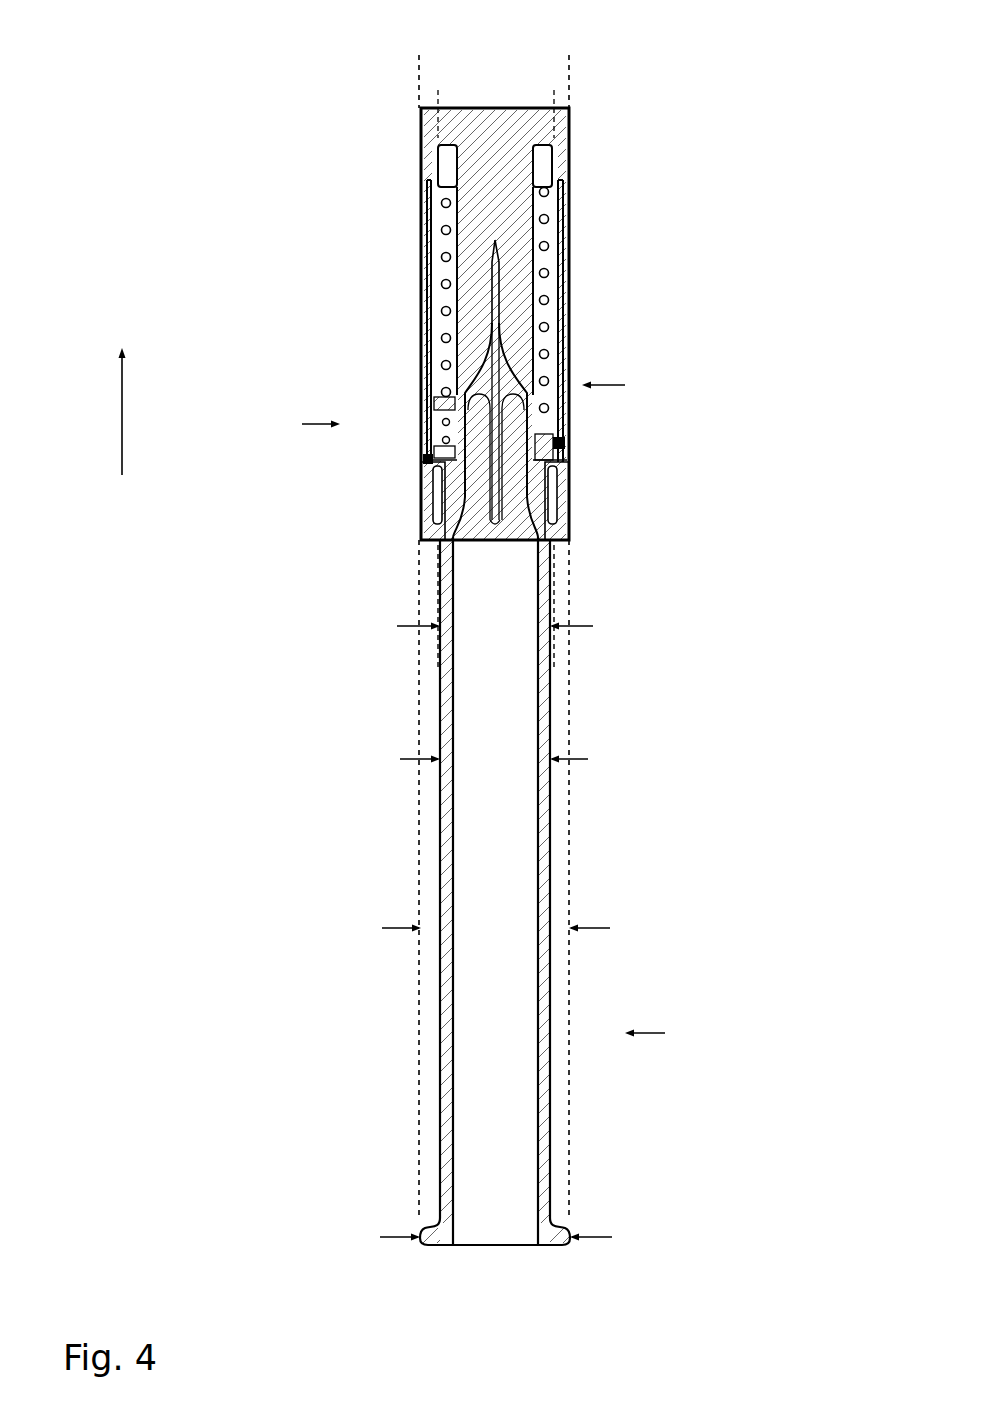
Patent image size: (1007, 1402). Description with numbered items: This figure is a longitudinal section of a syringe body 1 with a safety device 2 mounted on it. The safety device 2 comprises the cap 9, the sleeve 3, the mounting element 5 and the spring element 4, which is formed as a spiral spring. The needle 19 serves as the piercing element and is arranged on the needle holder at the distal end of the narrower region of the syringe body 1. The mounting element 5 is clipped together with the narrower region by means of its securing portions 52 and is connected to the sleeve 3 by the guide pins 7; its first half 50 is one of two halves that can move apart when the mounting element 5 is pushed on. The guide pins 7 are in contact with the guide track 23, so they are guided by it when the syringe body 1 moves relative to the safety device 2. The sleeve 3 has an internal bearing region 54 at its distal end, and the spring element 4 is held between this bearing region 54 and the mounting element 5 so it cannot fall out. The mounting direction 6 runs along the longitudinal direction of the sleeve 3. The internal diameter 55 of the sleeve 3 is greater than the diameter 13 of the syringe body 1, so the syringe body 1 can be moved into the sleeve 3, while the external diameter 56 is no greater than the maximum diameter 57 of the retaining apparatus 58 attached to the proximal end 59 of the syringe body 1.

The syringe body 1 is at (543, 680).
The safety device 2 is at (648, 77).
The sleeve 3 is at (558, 178).
The spring element 4 is at (556, 358).
The mounting element 5 is at (556, 446).
The mounting direction 6 is at (122, 417).
The guide pins 7 is at (543, 445).
The cap 9 is at (501, 118).
The diameter of the syringe body 13 is at (412, 759).
The needle 19 is at (497, 297).
The guide track 23 is at (472, 406).
The first half of the mounting element 50 is at (427, 456).
The securing portions 52 is at (440, 387).
The internal bearing region 54 is at (447, 180).
The internal diameter of the sleeve 55 is at (585, 626).
The external diameter of the sleeve 56 is at (596, 928).
The maximum diameter of the retaining apparatus 57 is at (580, 1237).
The retaining apparatus 58 is at (556, 1245).
The proximal end of the syringe body 59 is at (660, 1033).